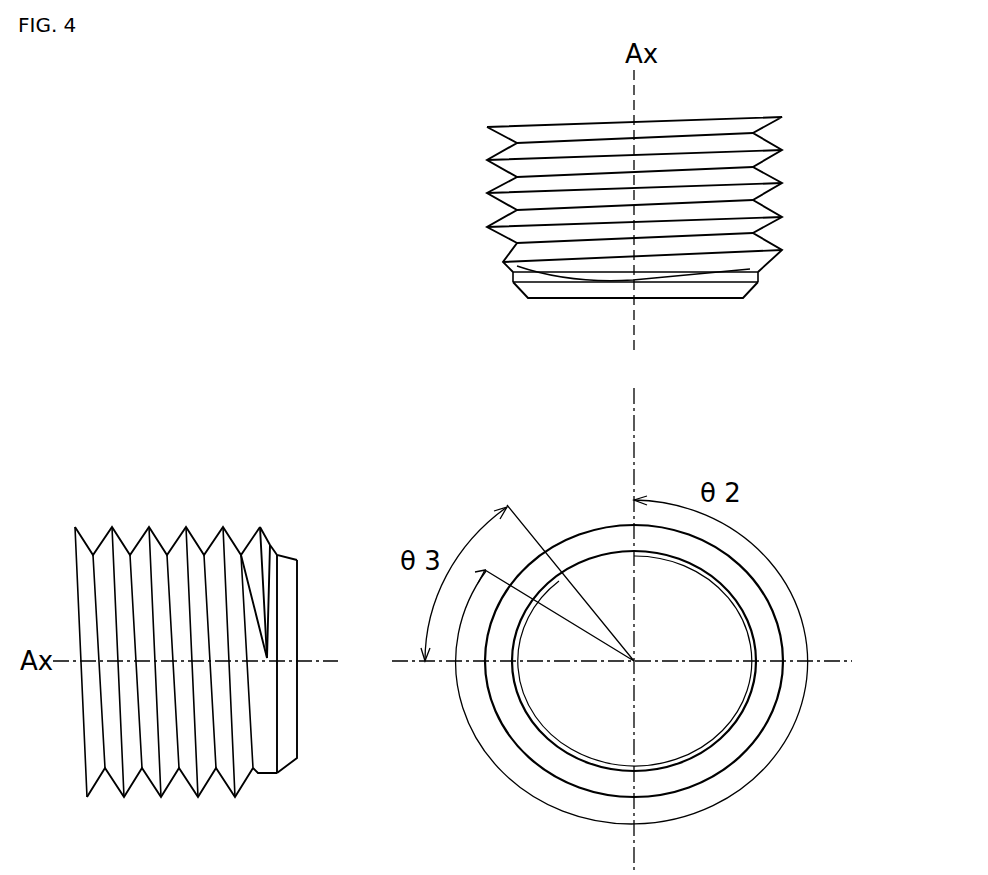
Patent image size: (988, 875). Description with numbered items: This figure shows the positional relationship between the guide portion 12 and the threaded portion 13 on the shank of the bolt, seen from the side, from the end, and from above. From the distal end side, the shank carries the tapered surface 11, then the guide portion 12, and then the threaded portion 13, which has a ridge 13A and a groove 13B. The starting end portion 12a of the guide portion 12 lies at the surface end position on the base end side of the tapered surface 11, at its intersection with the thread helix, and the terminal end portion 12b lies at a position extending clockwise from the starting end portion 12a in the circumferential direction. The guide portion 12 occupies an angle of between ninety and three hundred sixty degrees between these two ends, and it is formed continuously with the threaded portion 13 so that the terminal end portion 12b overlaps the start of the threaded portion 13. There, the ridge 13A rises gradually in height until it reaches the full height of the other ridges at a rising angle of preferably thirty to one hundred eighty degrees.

The tapered surface 11 is at (570, 296).
The guide portion 12 is at (743, 289).
The starting end portion 12a is at (637, 283).
The terminal end portion 12b is at (277, 643).
The threaded portion 13 is at (873, 217).
The ridge 13A is at (755, 252).
The groove 13B is at (755, 231).